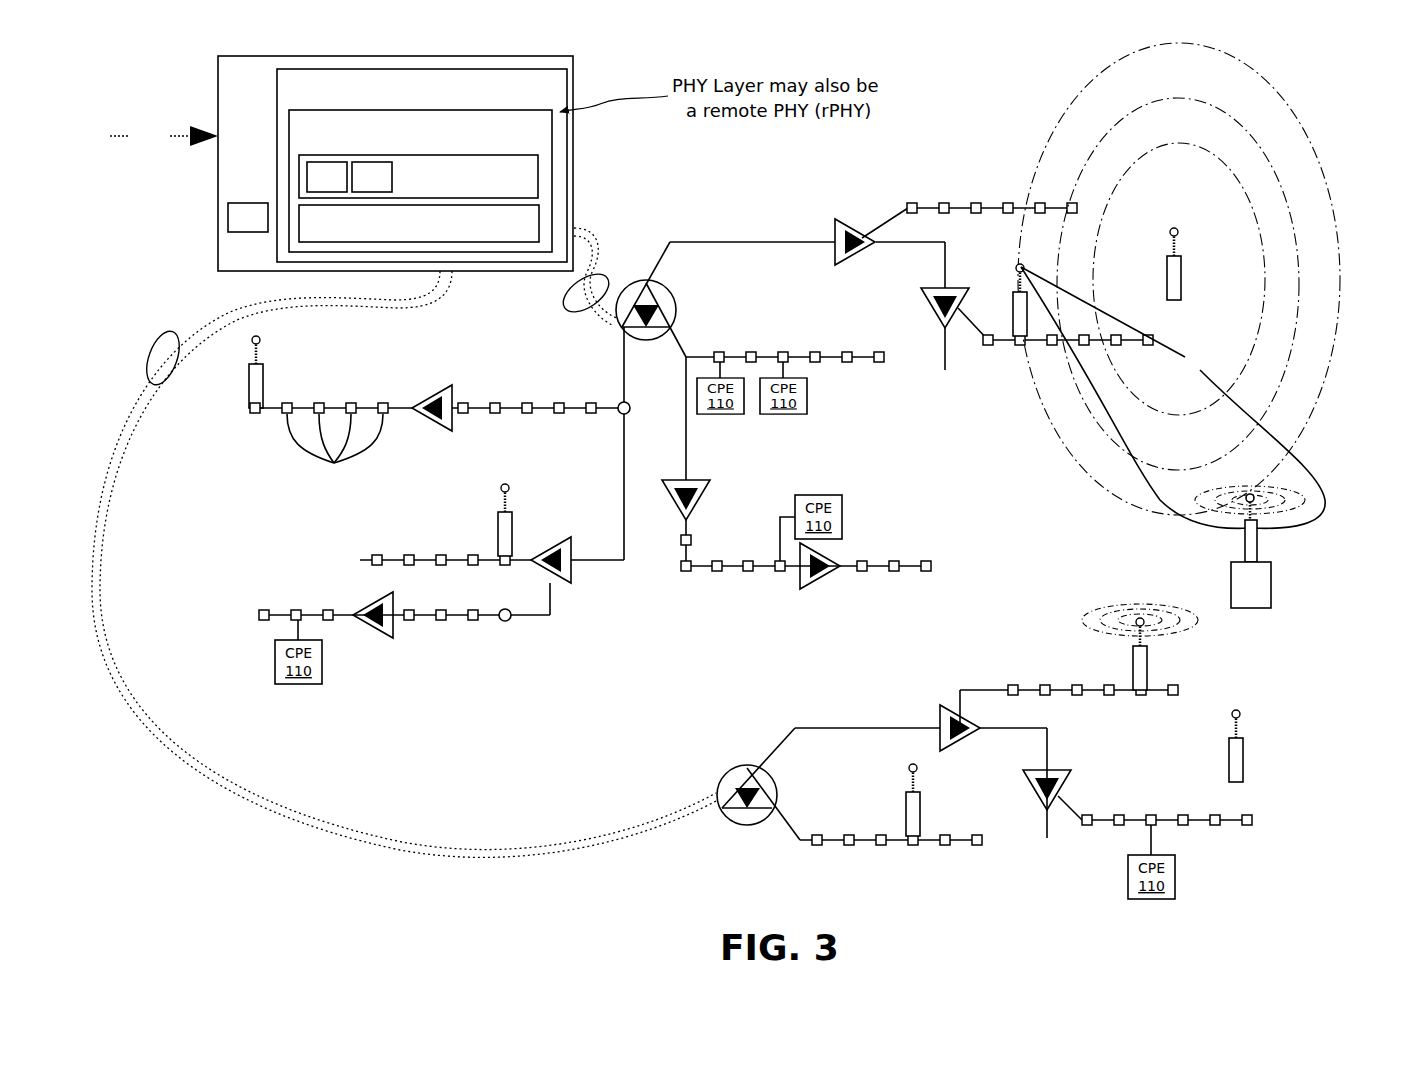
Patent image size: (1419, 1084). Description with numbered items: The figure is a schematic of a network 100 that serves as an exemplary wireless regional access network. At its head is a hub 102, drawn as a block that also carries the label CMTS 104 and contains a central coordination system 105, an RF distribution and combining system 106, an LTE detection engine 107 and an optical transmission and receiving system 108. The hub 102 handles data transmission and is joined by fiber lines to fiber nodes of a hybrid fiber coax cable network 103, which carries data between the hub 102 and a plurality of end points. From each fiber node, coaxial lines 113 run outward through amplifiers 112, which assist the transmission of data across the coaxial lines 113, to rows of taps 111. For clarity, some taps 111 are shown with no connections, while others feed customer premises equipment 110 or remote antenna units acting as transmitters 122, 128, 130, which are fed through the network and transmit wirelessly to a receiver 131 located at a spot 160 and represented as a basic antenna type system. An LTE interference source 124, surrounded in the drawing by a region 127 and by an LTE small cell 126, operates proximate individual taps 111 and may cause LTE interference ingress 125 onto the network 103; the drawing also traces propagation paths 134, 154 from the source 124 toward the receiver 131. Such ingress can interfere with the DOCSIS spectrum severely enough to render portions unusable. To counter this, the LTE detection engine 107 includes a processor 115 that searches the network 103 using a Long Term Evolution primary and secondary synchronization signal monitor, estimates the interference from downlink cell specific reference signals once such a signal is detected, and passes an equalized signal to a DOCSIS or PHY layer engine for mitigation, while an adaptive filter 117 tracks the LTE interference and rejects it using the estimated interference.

The network 100 is at (186, 908).
The hub 102 is at (341, 163).
The hybrid fiber coax cable (HFCC) network 103 is at (481, 730).
The CMTS 104 is at (422, 165).
The central coordination system (CCS) 105 is at (248, 217).
The RF distribution and combining system (RFDC) 106 is at (420, 181).
The LTE detection engine 107 is at (418, 176).
The optical transmission and receiving system (OTR) 108 is at (419, 223).
The customer premises equipment (CPE) 110 is at (725, 630).
The tap 111 is at (335, 453).
The amplifier 112 is at (430, 385).
The coaxial line 113 is at (667, 262).
The processor 115 is at (327, 177).
The adaptive filter 117 is at (372, 177).
The transmitter 122 is at (514, 520).
The LTE interference source 124 is at (1010, 300).
The LTE interference ingress 125 is at (1040, 478).
The LTE small cell 126 is at (1160, 666).
The LTE interference coverage area 127 is at (1341, 135).
The transmitter 128 is at (922, 812).
The transmitter 130 is at (236, 402).
The receiver 131 is at (1251, 551).
The propagation path 134 is at (1160, 410).
The propagation path 154 is at (1155, 497).
The spot 160 is at (1260, 494).